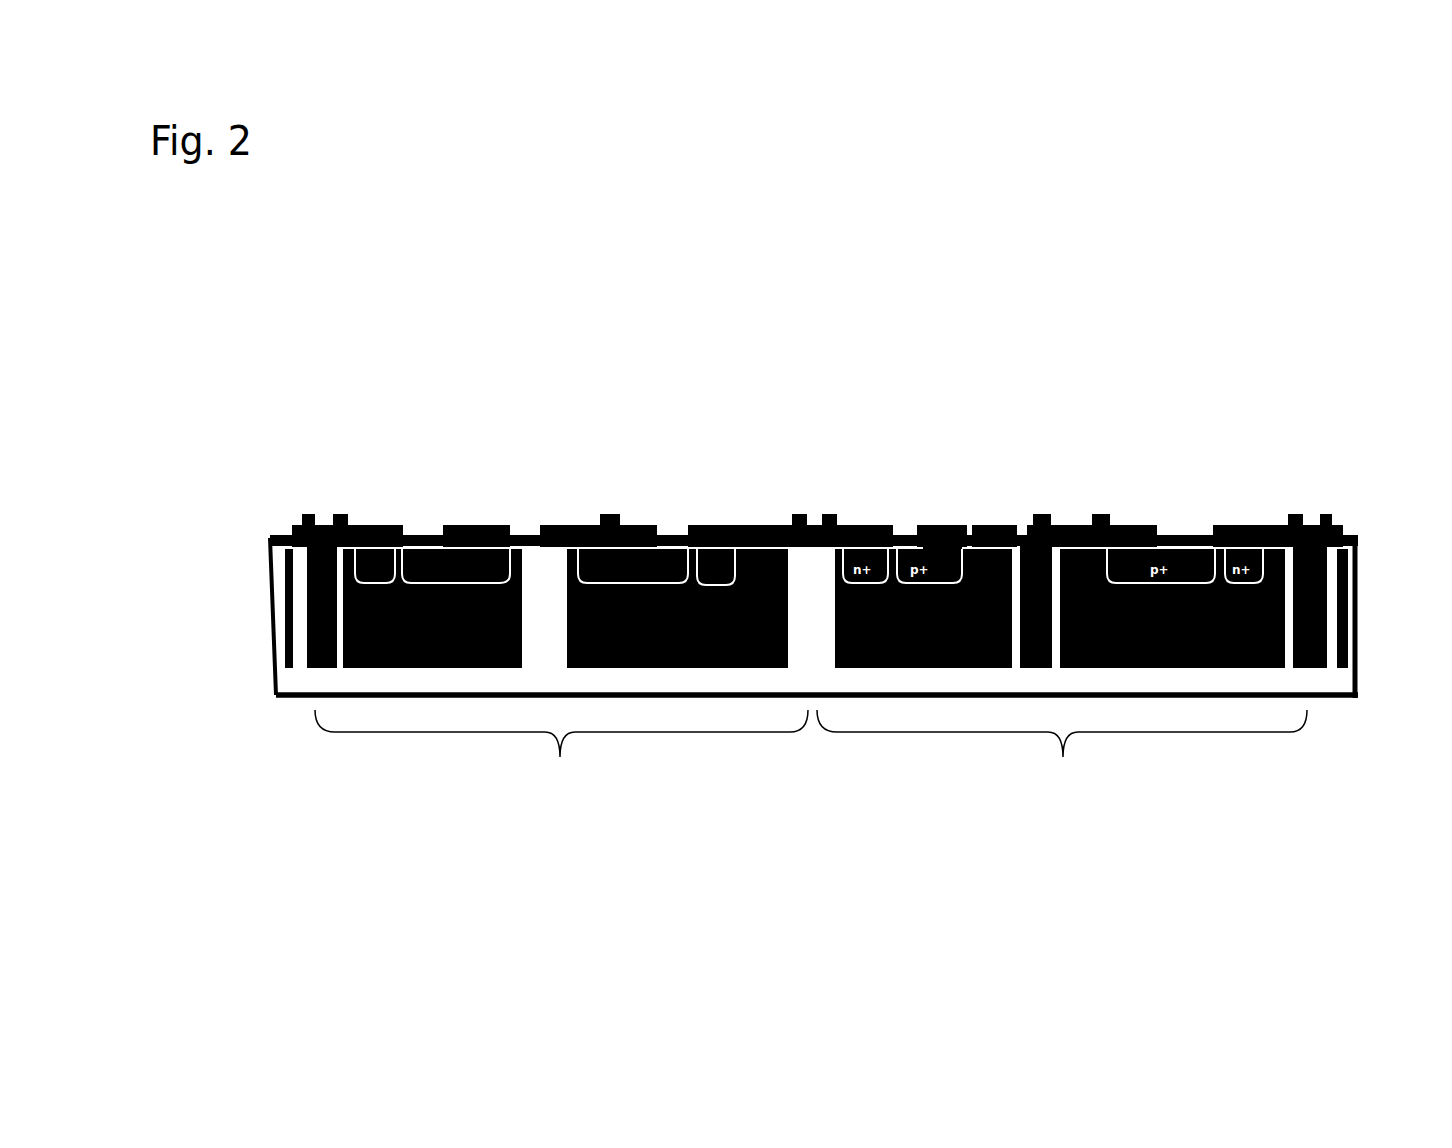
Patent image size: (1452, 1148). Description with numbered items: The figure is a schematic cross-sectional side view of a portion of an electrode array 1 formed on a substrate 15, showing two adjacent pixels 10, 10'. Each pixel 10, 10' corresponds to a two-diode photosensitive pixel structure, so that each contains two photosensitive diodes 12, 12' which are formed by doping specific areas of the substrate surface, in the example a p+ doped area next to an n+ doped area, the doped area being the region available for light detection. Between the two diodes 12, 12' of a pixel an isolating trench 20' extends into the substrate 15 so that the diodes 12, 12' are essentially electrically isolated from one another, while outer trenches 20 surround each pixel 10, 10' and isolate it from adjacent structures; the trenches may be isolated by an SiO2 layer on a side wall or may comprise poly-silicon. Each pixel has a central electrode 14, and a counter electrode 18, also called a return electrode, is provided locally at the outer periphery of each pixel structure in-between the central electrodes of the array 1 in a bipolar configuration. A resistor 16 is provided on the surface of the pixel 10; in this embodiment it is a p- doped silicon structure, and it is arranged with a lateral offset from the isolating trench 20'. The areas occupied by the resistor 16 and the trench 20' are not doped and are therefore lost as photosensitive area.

The electrode array 1 is at (962, 342).
The photosensitive pixel structure 10 is at (1062, 754).
The further pixel 10' is at (561, 754).
The photosensitive diode 12 is at (677, 692).
The second photosensitive diode 12' is at (432, 689).
The central electrode 14 is at (618, 513).
The substrate 15 is at (1193, 678).
The resistor 16 is at (765, 545).
The counter electrode 18 is at (815, 512).
The trench 20 is at (815, 615).
The isolating trench 20' is at (1092, 491).